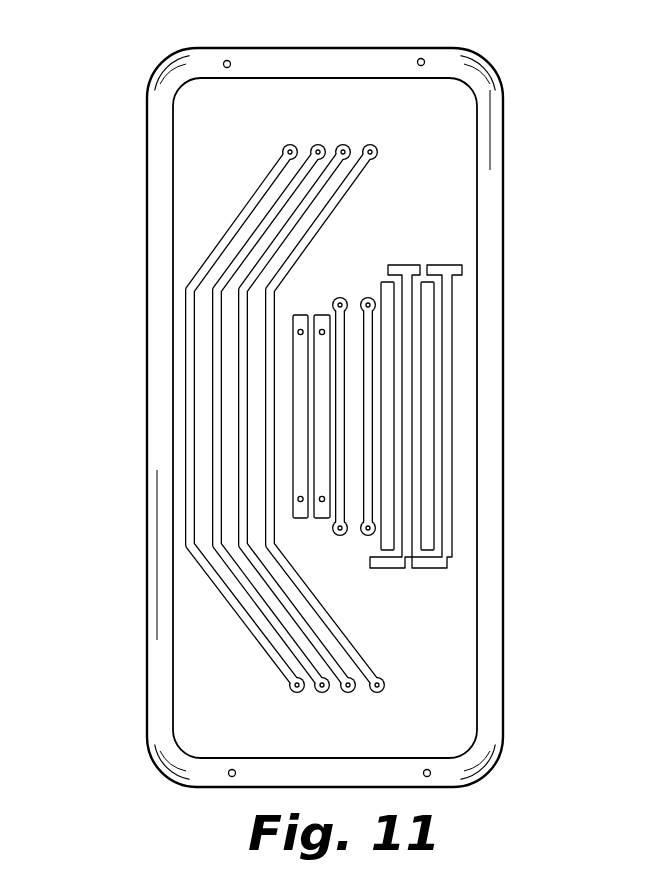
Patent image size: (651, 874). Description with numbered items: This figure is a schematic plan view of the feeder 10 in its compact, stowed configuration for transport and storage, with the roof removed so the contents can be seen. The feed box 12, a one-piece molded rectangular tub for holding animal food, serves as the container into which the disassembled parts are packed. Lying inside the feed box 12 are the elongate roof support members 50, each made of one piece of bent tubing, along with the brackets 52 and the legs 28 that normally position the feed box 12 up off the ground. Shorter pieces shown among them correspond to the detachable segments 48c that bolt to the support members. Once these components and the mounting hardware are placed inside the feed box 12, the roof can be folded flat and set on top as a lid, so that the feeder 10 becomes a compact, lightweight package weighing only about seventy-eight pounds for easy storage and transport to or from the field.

The feeder 10 is at (108, 72).
The feed box 12 is at (497, 59).
The legs 28 is at (425, 570).
The rectangular contact pads 48c is at (300, 518).
The elongate roof support members 50 is at (273, 662).
The brackets 52 is at (340, 536).